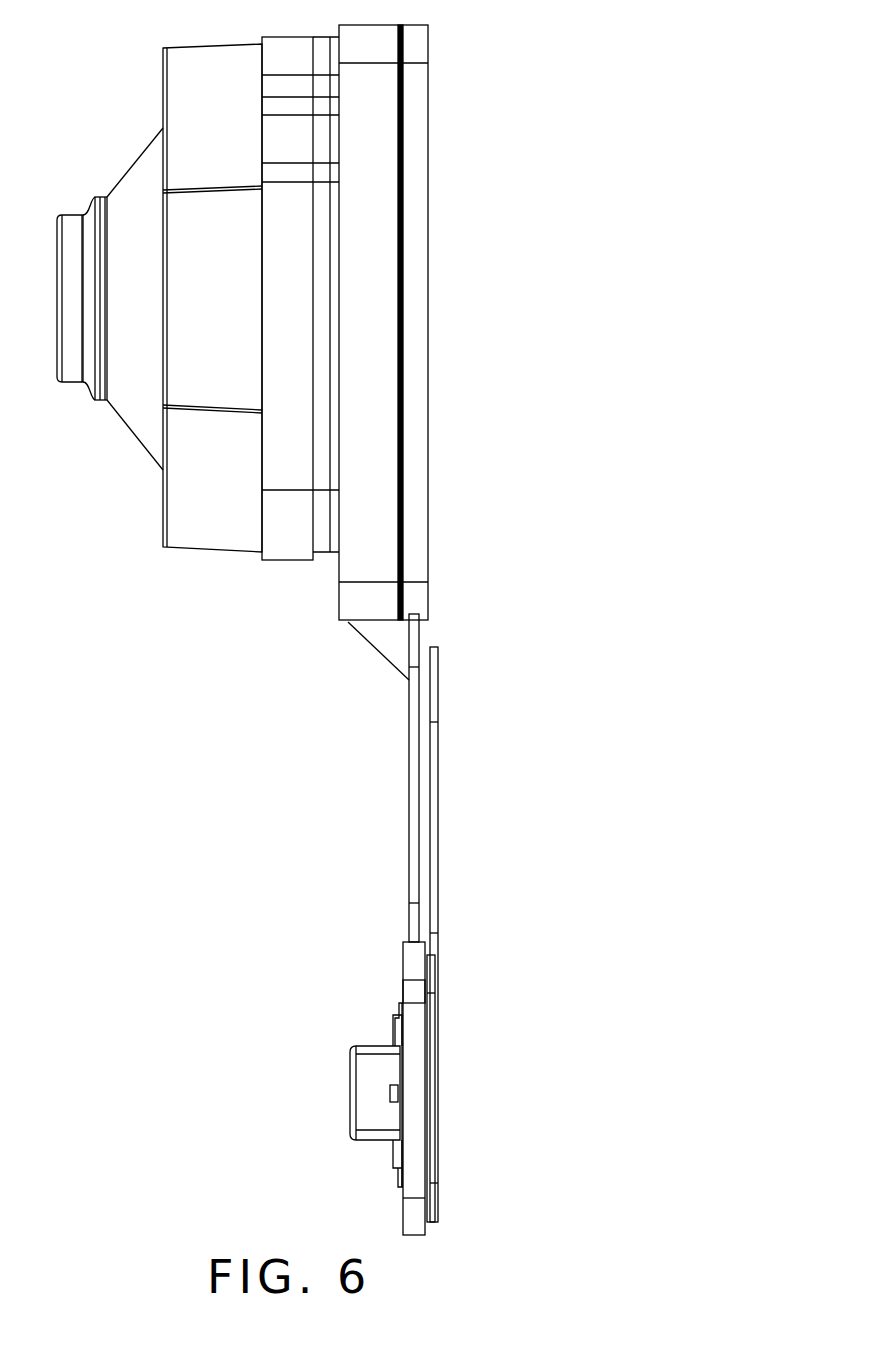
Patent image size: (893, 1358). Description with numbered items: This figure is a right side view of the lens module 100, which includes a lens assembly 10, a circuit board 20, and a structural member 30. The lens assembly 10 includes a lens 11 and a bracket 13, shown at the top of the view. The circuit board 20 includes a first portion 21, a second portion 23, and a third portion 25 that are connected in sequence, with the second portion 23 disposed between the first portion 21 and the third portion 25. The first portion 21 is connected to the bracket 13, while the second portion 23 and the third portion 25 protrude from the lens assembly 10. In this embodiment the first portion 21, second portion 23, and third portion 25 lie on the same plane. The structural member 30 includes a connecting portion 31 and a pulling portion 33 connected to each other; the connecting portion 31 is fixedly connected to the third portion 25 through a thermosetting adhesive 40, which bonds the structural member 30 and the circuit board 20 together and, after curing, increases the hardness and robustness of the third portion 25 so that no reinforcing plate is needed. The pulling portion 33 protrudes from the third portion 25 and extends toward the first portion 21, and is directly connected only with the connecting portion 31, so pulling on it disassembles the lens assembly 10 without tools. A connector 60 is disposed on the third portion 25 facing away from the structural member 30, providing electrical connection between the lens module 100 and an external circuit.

The lens module 100 is at (116, 29).
The lens assembly 10 is at (503, 125).
The lens 11 is at (237, 145).
The bracket 13 is at (383, 227).
The circuit board 20 is at (322, 762).
The first portion 21 is at (413, 552).
The second portion 23 is at (415, 795).
The third portion 25 is at (415, 985).
The structural member 30 is at (508, 927).
The connecting portion 31 is at (432, 1020).
The pulling portion 33 is at (435, 903).
The thermosetting adhesive 40 is at (427, 998).
The connector 60 is at (370, 1103).